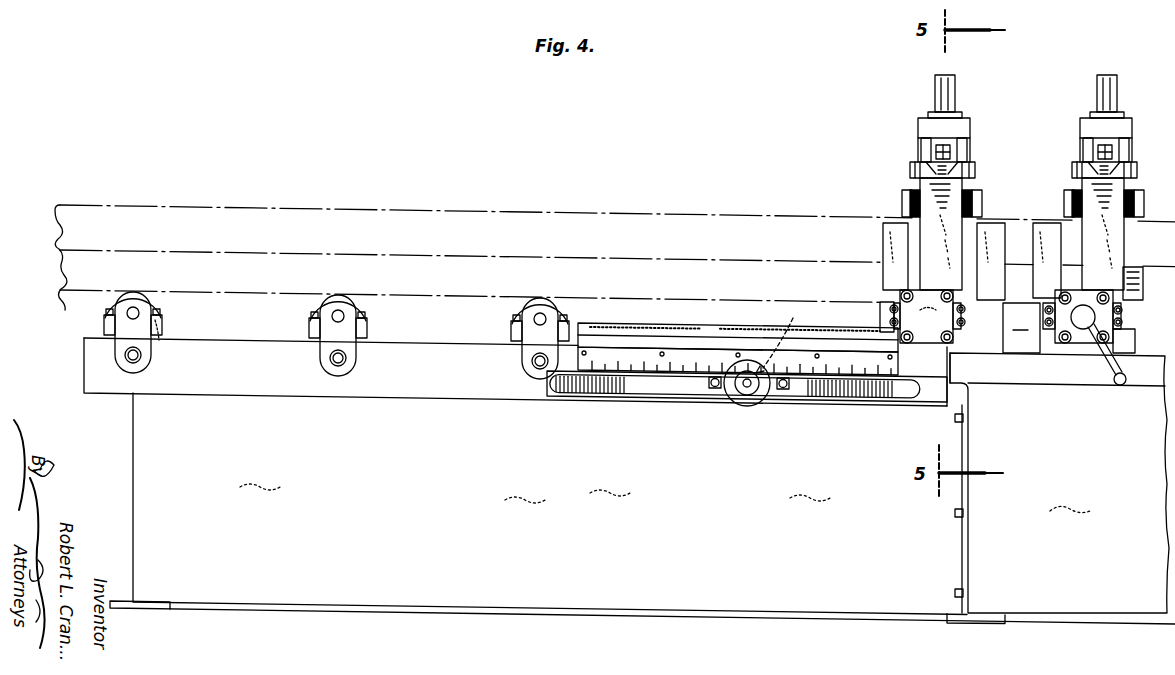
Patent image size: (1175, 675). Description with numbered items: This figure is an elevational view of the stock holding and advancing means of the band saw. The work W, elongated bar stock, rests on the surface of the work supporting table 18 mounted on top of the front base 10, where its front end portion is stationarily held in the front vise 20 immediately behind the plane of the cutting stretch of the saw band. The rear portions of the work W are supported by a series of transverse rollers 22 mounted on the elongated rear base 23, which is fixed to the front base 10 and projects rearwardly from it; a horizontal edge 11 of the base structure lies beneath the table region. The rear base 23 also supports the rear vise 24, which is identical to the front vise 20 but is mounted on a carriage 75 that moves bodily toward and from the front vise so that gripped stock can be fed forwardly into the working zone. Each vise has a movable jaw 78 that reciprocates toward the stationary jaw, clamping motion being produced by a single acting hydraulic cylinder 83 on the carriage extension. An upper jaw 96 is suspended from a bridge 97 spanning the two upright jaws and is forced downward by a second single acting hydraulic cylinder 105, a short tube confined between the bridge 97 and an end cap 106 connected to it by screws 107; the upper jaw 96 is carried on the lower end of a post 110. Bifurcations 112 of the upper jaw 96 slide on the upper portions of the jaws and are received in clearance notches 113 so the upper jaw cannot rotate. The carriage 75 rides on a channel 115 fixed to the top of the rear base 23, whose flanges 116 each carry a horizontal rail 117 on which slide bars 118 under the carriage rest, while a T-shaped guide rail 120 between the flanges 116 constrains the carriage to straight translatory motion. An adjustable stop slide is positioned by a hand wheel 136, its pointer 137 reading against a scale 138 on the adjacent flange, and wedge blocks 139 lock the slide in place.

The front base 10 is at (1106, 482).
The top plate of housing 11 is at (1048, 385).
The work supporting table 18 is at (1015, 346).
The front vise 20 is at (1060, 190).
The transverse rollers 22 is at (155, 310).
The rear base 23 is at (625, 530).
The rear vise 24 is at (939, 200).
The carriage 75 is at (884, 306).
The movable jaw 78 is at (898, 273).
The single acting hydraulic cylinder 83 is at (937, 336).
The upper jaw 96 is at (915, 200).
The bridge 97 is at (974, 170).
The single acting hydraulic cylinder 105 is at (923, 200).
The end cap 106 is at (919, 128).
The screws 107 is at (970, 148).
The post 110 is at (936, 80).
The bifurcations 112 is at (902, 203).
The clearance notches 113 is at (908, 243).
The channel 115 is at (444, 376).
The flanges 116 is at (498, 376).
The horizontal rail 117 is at (604, 336).
The slide bars 118 is at (876, 328).
The guide rail 120 is at (689, 336).
The hand wheel 136 is at (743, 392).
The pointer 137 is at (791, 322).
The scale 138 is at (648, 385).
The wedge blocks 139 is at (712, 390).
The work W is at (688, 247).